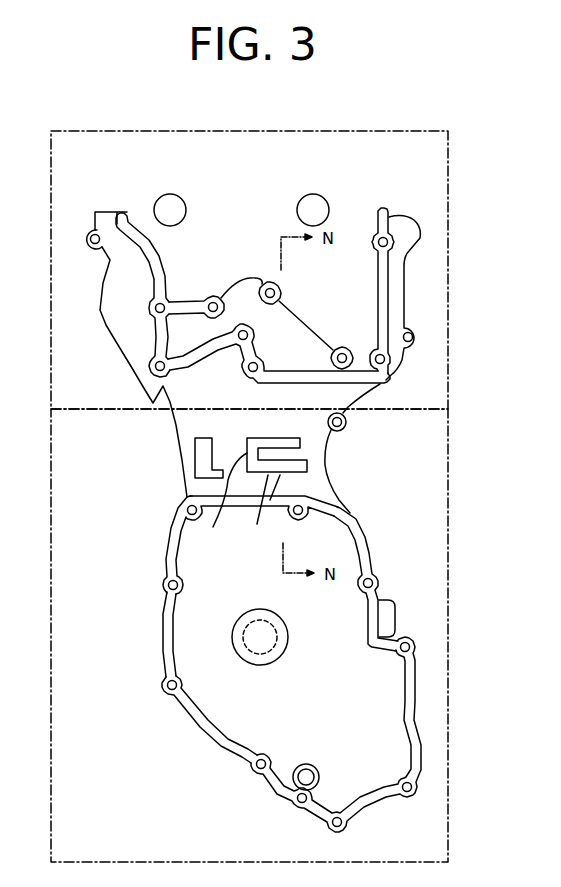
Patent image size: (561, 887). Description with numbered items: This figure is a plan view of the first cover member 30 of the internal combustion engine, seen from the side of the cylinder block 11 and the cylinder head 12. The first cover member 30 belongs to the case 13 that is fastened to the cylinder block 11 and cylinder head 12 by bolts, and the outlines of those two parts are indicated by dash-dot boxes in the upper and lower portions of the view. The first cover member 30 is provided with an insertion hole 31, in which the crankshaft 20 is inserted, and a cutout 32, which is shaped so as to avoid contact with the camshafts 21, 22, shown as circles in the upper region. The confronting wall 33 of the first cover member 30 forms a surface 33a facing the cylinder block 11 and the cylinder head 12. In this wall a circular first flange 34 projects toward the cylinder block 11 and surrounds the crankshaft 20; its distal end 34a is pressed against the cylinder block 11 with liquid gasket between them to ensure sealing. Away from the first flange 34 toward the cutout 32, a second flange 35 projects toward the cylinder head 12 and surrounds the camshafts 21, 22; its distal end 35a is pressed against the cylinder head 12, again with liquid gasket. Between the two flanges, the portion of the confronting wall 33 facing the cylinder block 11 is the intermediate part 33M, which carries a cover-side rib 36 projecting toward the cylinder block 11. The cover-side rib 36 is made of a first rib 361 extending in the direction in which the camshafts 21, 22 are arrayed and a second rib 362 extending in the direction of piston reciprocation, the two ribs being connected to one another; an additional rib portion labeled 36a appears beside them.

The cylinder block 11 is at (448, 503).
The cylinder head 12 is at (448, 258).
The case 13 is at (266, 664).
The crankshaft 20 is at (291, 658).
The camshaft 21 is at (160, 197).
The camshaft 22 is at (322, 197).
The first cover member 30 is at (266, 664).
The insertion hole 31 is at (260, 668).
The cutout 32 is at (166, 243).
The confronting wall 33 is at (379, 579).
The intermediate part 33M is at (327, 465).
The surface 33a is at (362, 550).
The first flange 34 is at (182, 629).
The distal end 34a is at (162, 618).
The second flange 35 is at (376, 302).
The distal end 35a is at (377, 303).
The cover-side rib 36 is at (220, 510).
The L-shaped rib 36a is at (194, 459).
The first rib 361 is at (275, 494).
The second rib 362 is at (220, 502).